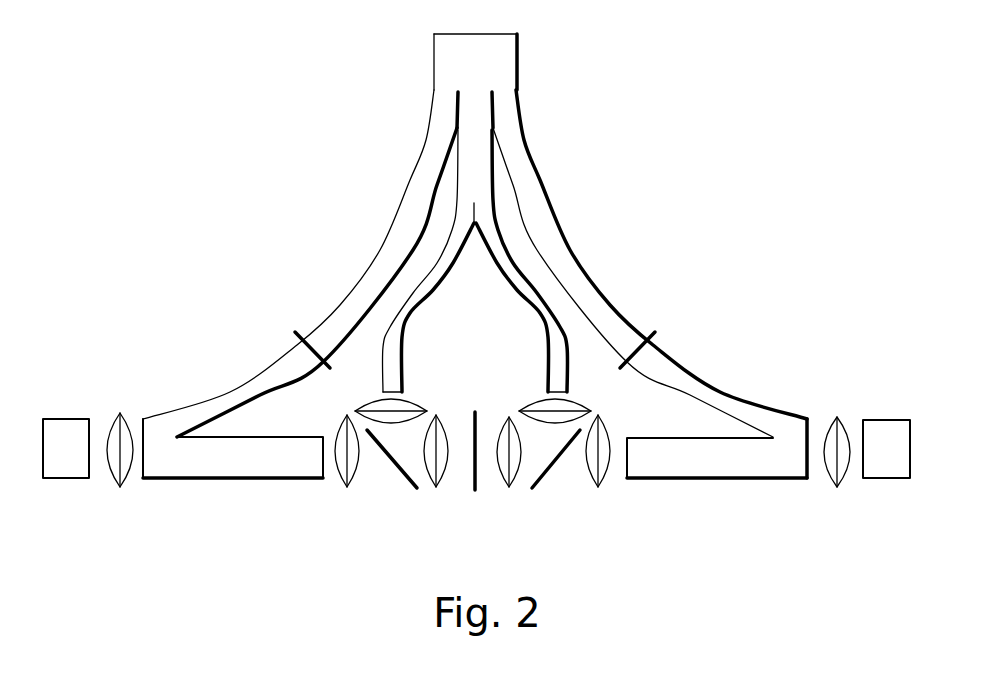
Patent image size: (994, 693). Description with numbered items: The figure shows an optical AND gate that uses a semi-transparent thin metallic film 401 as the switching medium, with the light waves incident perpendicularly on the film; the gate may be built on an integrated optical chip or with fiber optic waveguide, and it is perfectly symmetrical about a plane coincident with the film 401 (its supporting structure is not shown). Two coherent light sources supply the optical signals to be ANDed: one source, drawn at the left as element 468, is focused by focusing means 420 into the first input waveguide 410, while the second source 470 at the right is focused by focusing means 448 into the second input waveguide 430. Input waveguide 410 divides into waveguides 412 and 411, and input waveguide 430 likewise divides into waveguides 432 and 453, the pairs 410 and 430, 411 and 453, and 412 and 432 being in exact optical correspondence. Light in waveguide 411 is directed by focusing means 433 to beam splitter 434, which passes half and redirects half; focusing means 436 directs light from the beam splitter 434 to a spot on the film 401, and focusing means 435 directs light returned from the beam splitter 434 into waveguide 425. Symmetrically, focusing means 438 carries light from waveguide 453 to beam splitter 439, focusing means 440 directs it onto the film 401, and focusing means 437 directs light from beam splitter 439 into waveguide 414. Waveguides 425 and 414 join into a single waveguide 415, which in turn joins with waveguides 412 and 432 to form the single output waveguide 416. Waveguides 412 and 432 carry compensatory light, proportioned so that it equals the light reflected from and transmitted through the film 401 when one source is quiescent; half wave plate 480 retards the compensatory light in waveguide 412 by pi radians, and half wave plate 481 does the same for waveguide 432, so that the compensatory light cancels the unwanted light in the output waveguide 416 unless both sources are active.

The thin metallic film 401 is at (477, 490).
The first input waveguide 410 is at (156, 416).
The waveguide 411 is at (246, 479).
The waveguide 412 is at (378, 252).
The waveguide 414 is at (533, 305).
The single waveguide 415 is at (497, 153).
The output waveguide 416 is at (519, 74).
The focusing means 420 is at (120, 488).
The waveguide 425 is at (404, 345).
The second input waveguide 430 is at (787, 412).
The waveguide 432 is at (575, 251).
The focusing means 433 is at (355, 481).
The beam splitter 434 is at (403, 478).
The focusing means 435 is at (412, 401).
The focusing means 436 is at (437, 488).
The focusing means 437 is at (584, 410).
The focusing means 438 is at (599, 488).
The beam splitter 439 is at (550, 473).
The focusing means 440 is at (502, 423).
The focusing means 448 is at (837, 417).
The waveguide 453 is at (716, 479).
The light source 468 is at (60, 479).
The coherent light source 470 is at (885, 480).
The half wave plate 480 is at (296, 332).
The half wave plate 481 is at (656, 331).